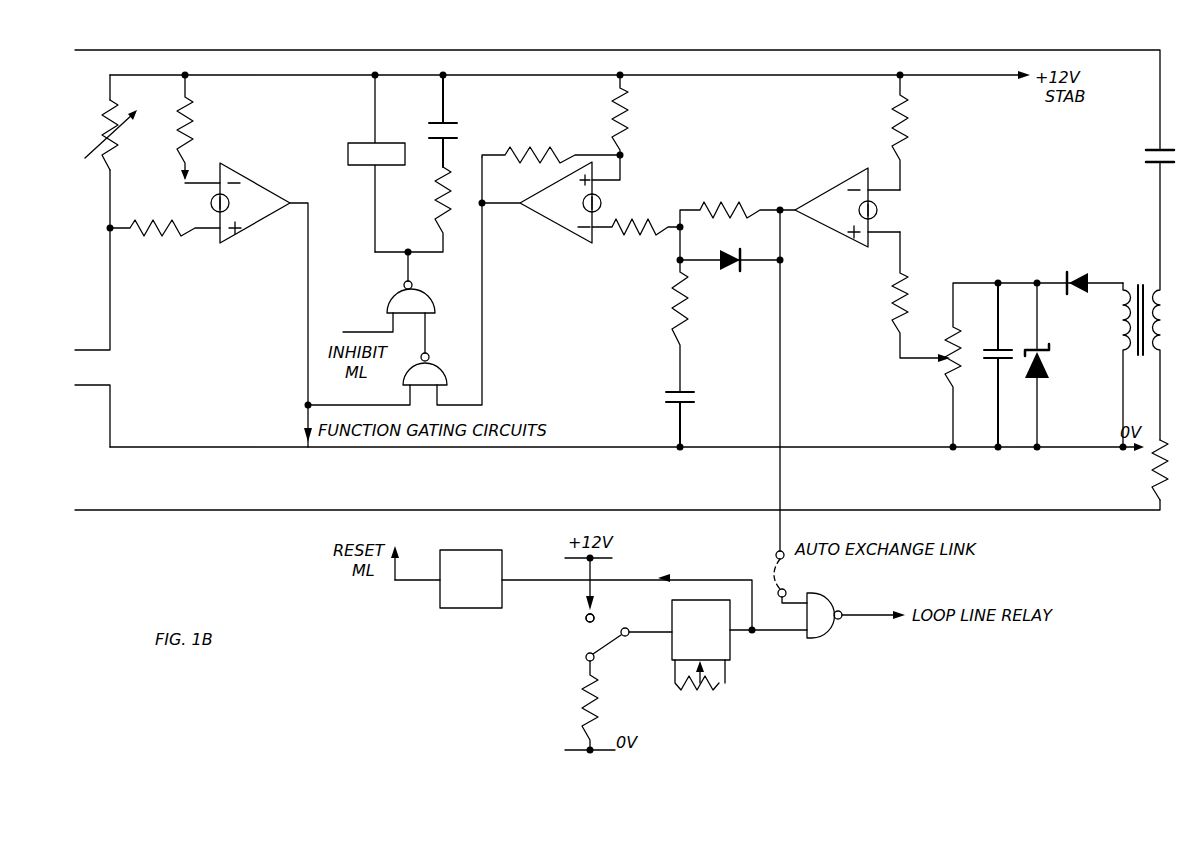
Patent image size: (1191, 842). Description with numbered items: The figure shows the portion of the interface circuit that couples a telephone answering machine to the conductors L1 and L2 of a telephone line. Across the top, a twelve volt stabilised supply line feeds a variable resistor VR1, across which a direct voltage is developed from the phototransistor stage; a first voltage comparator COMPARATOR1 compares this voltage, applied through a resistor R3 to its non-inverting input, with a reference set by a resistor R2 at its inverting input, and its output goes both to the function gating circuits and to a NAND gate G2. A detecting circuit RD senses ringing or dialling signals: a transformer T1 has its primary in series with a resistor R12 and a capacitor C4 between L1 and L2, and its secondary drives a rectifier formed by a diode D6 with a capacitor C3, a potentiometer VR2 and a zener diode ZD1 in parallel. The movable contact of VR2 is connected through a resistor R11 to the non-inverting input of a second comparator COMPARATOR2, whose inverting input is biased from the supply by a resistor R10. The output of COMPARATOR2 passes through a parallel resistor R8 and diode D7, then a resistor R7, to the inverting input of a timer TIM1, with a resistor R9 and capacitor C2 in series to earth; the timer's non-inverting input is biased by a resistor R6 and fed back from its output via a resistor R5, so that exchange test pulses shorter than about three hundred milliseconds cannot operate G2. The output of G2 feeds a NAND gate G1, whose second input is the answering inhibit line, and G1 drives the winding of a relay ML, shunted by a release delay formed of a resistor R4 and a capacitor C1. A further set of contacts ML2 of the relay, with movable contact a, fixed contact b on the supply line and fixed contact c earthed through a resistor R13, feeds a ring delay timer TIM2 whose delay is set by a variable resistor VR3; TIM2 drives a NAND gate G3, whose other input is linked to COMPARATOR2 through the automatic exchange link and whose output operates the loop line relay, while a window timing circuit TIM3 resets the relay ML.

The telephone line conductor L1 is at (617, 87).
The telephone line conductor L2 is at (1098, 518).
The variable resistor VR1 is at (98, 135).
The resistor R2 is at (199, 129).
The resistor R3 is at (165, 241).
The voltage comparator COMPARATOR1 is at (262, 226).
The relay ML is at (365, 143).
The capacitor C1 is at (456, 121).
The resistor R4 is at (413, 209).
The NAND gate G1 is at (422, 300).
The NAND gate G2 is at (435, 372).
The resistor R5 is at (548, 140).
The bias resistor R6 is at (628, 110).
The timer TIM1 is at (541, 205).
The resistor R7 is at (648, 222).
The resistor R8 is at (742, 200).
The diode D7 is at (730, 261).
The resistor R9 is at (667, 300).
The capacitor C2 is at (662, 420).
The second voltage comparator COMPARATOR2 is at (880, 214).
The resistor R10 is at (890, 116).
The resistor R11 is at (893, 296).
The potentiometer VR2 is at (980, 367).
The capacitor C3 is at (990, 365).
The zener diode ZD1 is at (1055, 365).
The detecting circuit RD is at (1048, 295).
The diode D6 is at (1078, 296).
The transformer T1 is at (1140, 306).
The capacitor C4 is at (1136, 159).
The resistor R12 is at (1139, 470).
The window timing circuit TIM3 is at (571, 578).
The set of relay contacts ML2 is at (599, 589).
The movable contact a is at (646, 642).
The fixed contact b is at (582, 622).
The fixed contact c is at (593, 653).
The resistor R13 is at (580, 698).
The ring delay timer TIM2 is at (739, 630).
The variable resistor VR3 is at (708, 690).
The NAND gate G3 is at (822, 605).